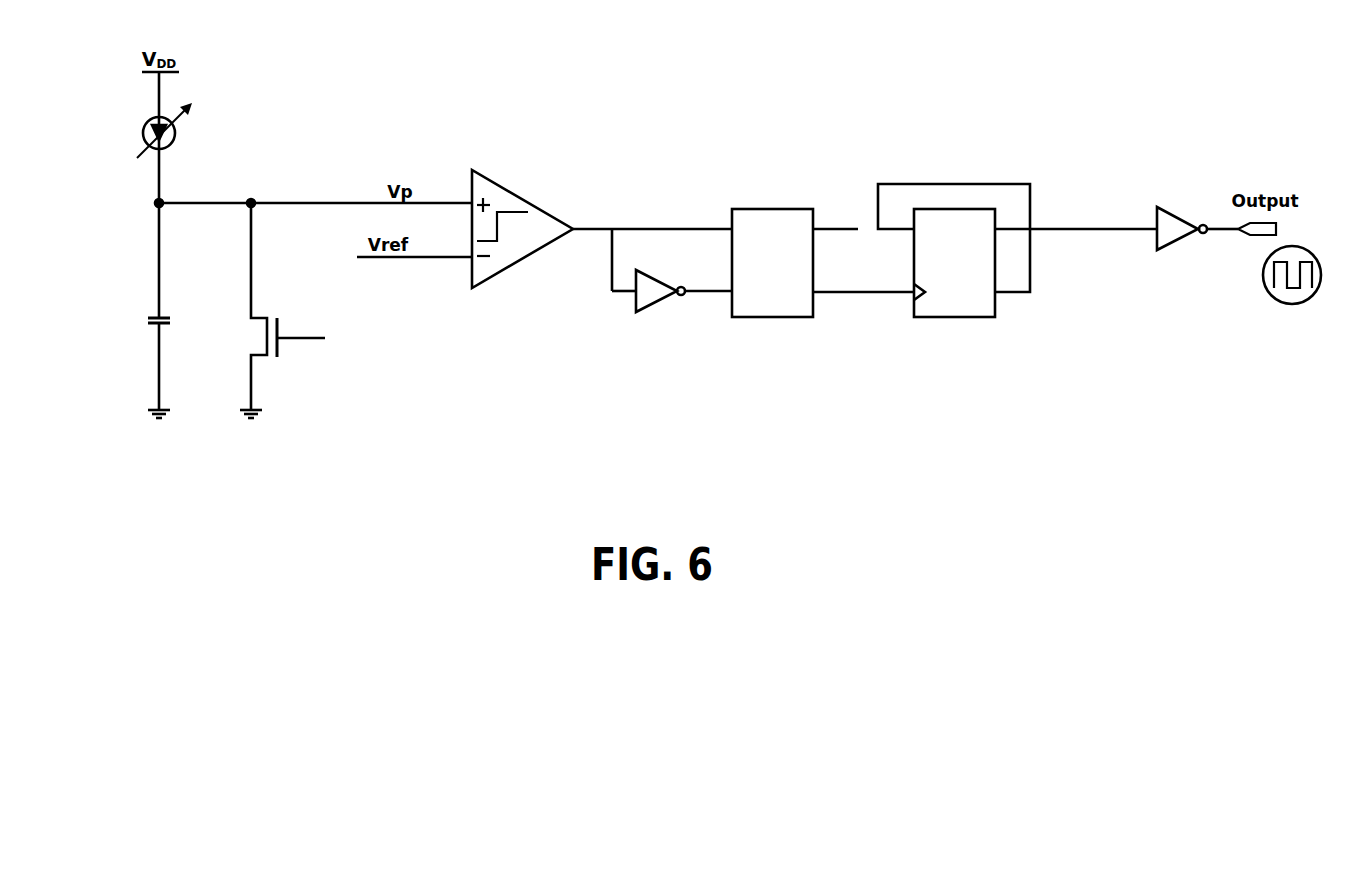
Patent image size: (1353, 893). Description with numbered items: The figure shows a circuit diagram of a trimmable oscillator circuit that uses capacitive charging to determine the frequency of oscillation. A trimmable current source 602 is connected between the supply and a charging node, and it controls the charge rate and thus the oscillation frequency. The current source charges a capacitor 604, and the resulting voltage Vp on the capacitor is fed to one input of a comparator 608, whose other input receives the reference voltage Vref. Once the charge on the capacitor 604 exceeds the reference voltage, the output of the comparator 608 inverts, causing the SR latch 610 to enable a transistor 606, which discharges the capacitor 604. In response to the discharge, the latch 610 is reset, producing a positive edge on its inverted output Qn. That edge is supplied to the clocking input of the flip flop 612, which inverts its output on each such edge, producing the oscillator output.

The trimmable current source 602 is at (176, 134).
The capacitor 604 is at (165, 312).
The transistor 606 is at (268, 312).
The comparator 608 is at (507, 186).
The SR latch 610 is at (757, 206).
The flip flop 612 is at (952, 214).